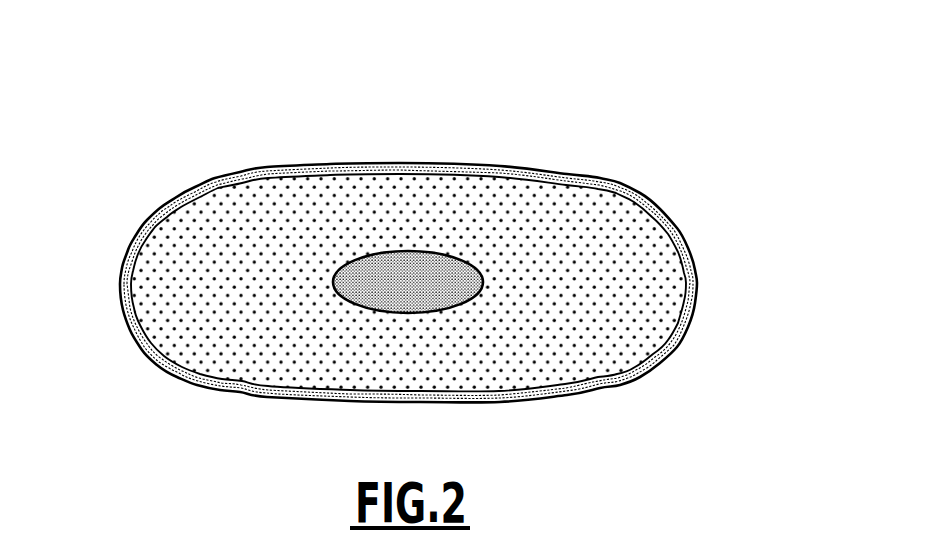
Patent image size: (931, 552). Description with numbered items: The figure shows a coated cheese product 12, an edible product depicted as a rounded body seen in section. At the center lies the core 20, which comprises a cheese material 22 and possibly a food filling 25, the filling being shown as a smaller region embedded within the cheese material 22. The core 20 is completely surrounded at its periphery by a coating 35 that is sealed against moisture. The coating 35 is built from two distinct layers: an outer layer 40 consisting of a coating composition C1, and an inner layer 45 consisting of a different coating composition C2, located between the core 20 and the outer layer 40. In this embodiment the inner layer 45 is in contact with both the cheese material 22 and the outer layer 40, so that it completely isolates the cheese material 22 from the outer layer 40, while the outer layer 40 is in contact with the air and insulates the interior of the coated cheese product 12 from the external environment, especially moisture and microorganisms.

The coated cheese product 12 is at (148, 138).
The core 20 is at (407, 82).
The cheese material 22 is at (342, 212).
The food filling 25 is at (402, 277).
The coating 35 is at (765, 210).
The outer layer 40 is at (696, 262).
The inner layer 45 is at (697, 283).